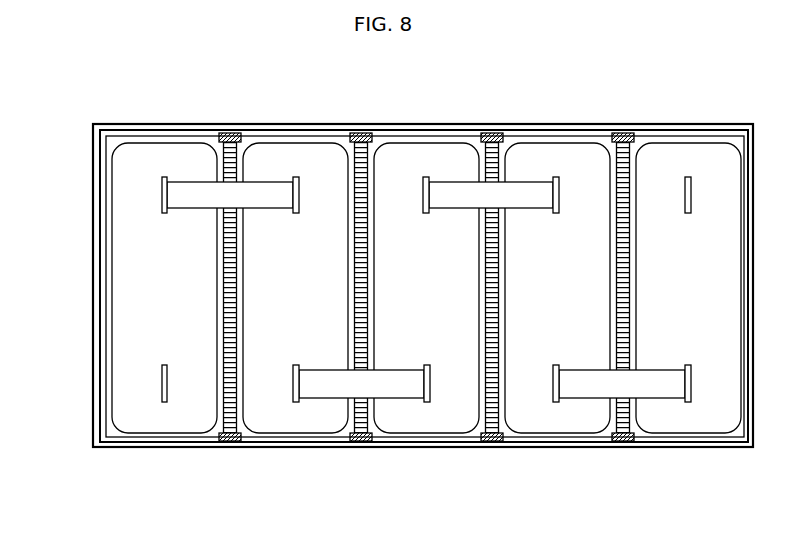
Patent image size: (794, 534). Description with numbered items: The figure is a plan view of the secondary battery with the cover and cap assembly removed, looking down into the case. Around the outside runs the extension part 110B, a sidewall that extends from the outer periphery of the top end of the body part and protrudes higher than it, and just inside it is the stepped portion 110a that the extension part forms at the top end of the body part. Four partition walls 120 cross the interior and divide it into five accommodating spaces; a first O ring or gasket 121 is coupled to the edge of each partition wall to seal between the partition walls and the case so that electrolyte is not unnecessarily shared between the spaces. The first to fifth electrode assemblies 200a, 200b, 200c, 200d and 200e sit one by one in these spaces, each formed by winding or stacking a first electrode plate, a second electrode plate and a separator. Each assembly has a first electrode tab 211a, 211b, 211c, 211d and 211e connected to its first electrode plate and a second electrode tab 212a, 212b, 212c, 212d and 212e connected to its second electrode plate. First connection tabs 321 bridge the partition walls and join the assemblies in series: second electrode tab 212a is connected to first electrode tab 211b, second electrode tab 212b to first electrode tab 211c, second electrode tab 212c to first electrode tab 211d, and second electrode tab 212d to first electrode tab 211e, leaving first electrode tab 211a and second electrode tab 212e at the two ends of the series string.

The extension part 110B is at (93, 167).
The stepped portion 110a is at (100, 219).
The partition walls 120 is at (355, 358).
The first O ring or gasket 121 is at (229, 133).
The first electrode assembly 200a is at (198, 418).
The second electrode assembly 200b is at (330, 418).
The third electrode assembly 200c is at (460, 418).
The fourth electrode assembly 200d is at (593, 418).
The fifth electrode assembly 200e is at (722, 418).
The first electrode tab 211a is at (162, 403).
The first electrode tab 211b is at (296, 177).
The first electrode tab 211c is at (427, 403).
The first electrode tab 211d is at (556, 177).
The first electrode tab 211e is at (688, 403).
The second electrode tab 212a is at (164, 177).
The second electrode tab 212b is at (295, 403).
The second electrode tab 212c is at (426, 177).
The second electrode tab 212d is at (556, 403).
The second electrode tab 212e is at (688, 177).
The first connection tabs 321 is at (272, 203).